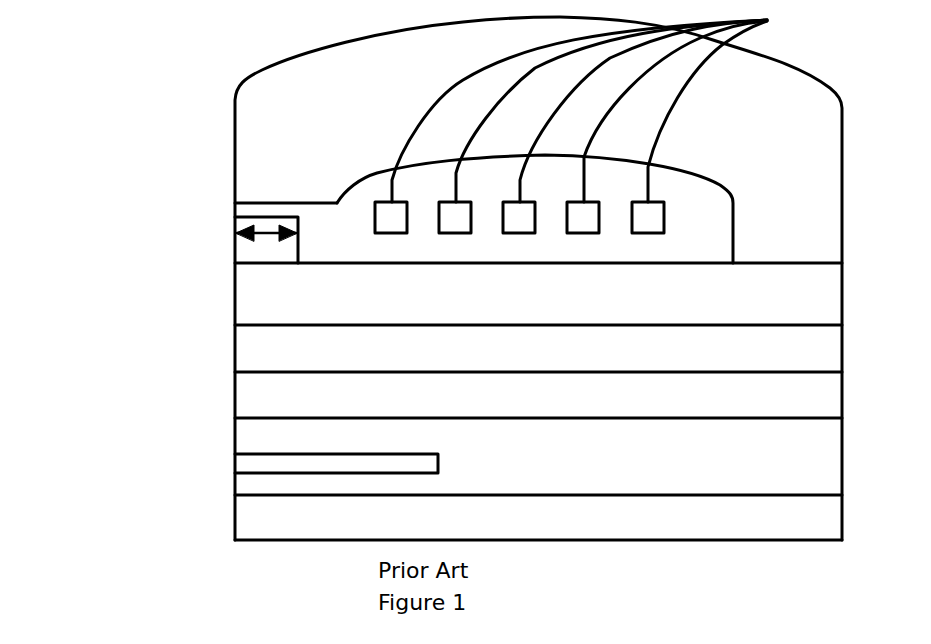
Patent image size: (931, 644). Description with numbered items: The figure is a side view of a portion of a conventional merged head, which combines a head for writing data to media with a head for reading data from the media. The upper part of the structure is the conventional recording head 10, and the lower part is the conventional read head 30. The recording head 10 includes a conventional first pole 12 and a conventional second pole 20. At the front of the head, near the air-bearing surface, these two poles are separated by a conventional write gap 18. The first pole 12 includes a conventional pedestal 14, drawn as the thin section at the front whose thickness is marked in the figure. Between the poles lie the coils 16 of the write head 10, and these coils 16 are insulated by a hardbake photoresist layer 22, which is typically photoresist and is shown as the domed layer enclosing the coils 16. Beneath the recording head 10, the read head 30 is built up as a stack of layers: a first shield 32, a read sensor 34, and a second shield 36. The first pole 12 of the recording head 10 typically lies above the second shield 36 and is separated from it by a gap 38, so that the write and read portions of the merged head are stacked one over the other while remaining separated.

The conventional recording head 10 is at (91, 18).
The first pole (P1) 12 is at (153, 218).
The pedestal 14 is at (210, 217).
The coils 16 is at (767, 20).
The write gap 18 is at (233, 209).
The second pole (P2) 20 is at (233, 140).
The hardbake photoresist layer 22 is at (377, 173).
The conventional read head 30 is at (104, 372).
The first shield (S1) 32 is at (233, 515).
The read sensor 34 is at (233, 463).
The second shield 36 is at (233, 402).
The gap 38 is at (233, 339).